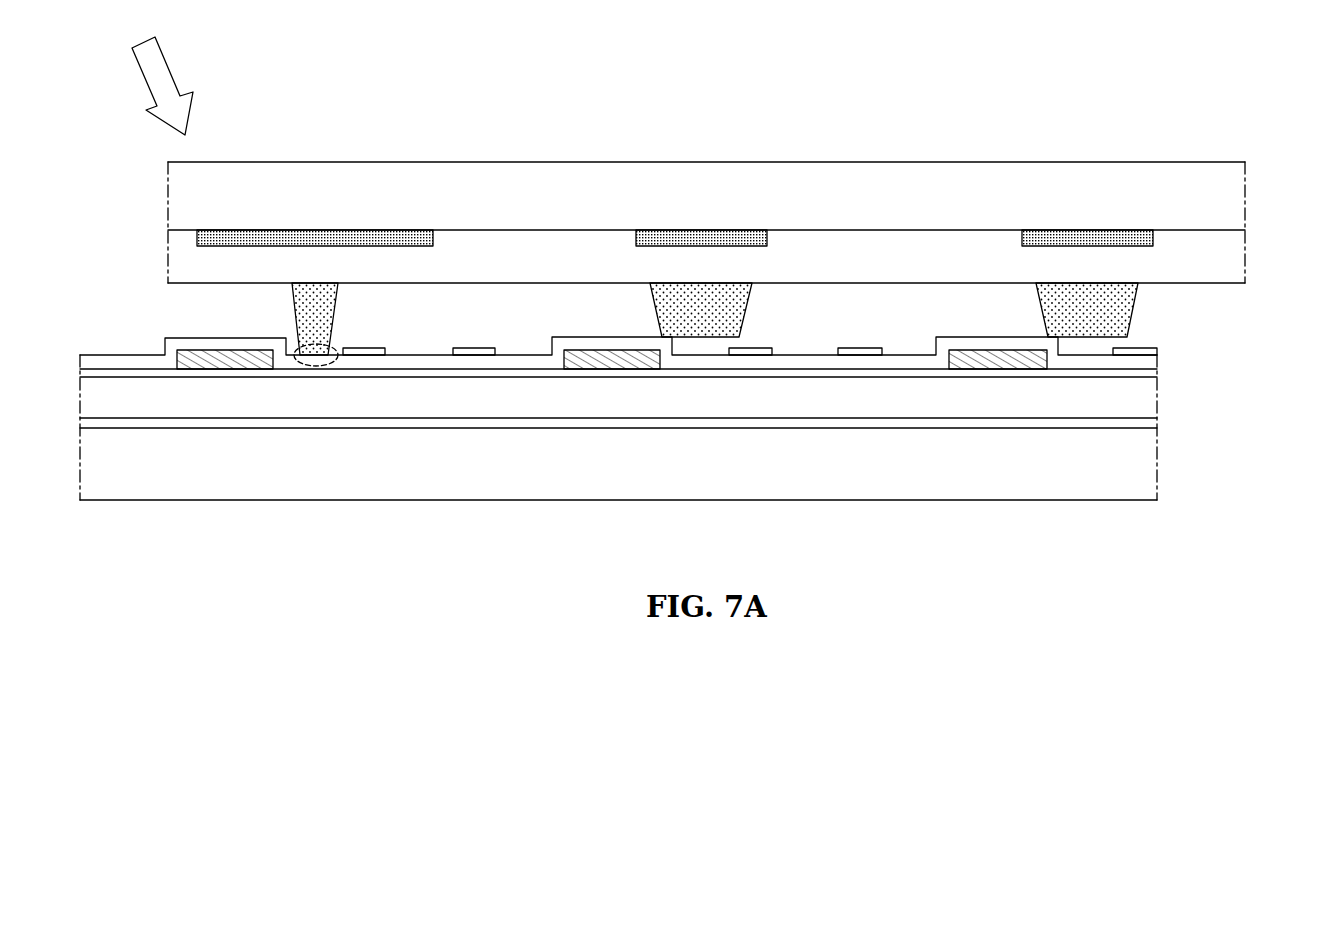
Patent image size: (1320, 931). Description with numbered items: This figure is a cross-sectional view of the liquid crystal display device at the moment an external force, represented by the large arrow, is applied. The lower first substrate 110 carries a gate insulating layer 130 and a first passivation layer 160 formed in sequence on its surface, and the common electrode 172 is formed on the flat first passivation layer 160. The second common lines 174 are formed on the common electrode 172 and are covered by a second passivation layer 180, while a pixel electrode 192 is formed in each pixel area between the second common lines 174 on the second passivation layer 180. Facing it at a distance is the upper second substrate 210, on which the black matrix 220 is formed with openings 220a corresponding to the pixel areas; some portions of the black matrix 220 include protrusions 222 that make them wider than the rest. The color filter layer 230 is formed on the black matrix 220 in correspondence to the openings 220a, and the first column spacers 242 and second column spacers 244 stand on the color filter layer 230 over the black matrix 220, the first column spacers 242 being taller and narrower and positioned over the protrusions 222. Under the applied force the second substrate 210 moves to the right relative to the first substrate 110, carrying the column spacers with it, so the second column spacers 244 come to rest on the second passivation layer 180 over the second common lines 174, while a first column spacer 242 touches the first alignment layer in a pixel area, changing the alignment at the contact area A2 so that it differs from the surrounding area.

The first substrate 110 is at (1140, 467).
The gate insulating layer 130 is at (1140, 425).
The first passivation layer 160 is at (1140, 403).
The common electrode 172 is at (117, 373).
The second common lines 174 is at (222, 366).
The second passivation layer 180 is at (1140, 362).
The pixel electrode 192 is at (365, 356).
The second substrate 210 is at (1228, 200).
The black matrix 220 is at (313, 234).
The openings 220a is at (522, 224).
The protrusions 222 is at (215, 234).
The color filter layer 230 is at (598, 247).
The first column spacers 242 is at (335, 308).
The second column spacers 244 is at (735, 312).
The contact area A2 is at (316, 366).